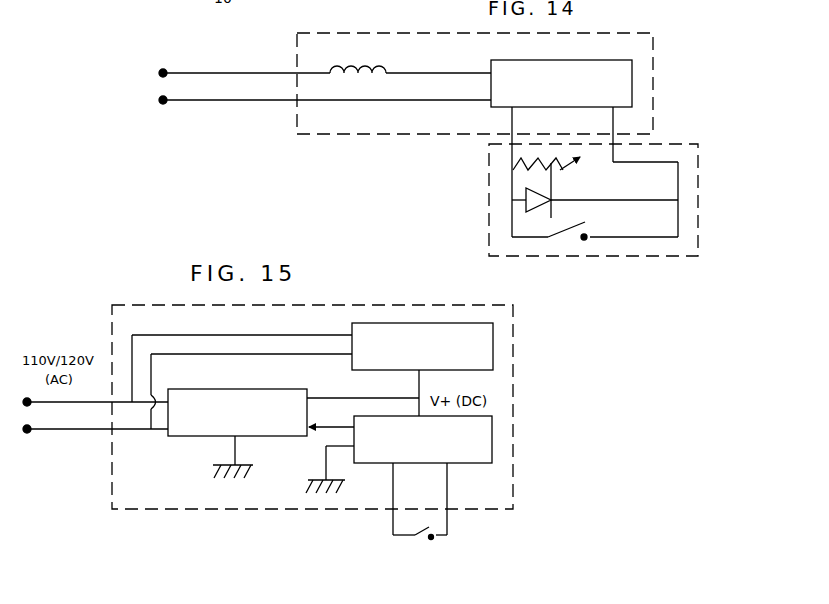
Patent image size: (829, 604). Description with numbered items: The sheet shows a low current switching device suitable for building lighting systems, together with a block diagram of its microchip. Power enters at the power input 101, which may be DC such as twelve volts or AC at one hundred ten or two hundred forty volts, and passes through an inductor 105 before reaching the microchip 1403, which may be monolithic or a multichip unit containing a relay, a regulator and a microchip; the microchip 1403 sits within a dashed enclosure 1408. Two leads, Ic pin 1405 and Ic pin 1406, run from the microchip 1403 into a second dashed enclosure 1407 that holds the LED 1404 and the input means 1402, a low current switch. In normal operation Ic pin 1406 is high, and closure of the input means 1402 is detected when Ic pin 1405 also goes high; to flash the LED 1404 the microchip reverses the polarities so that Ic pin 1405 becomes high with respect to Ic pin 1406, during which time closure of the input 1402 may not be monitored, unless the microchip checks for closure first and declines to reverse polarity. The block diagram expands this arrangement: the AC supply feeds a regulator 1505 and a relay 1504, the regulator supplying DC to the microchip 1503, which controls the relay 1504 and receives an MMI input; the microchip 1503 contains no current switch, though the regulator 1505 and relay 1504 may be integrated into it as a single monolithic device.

In FIG. 14, the power input 101 is at (158, 89).
In FIG. 14, the inductor 105 is at (356, 54).
In FIG. 14, the input means 1402 is at (570, 241).
In FIG. 14, the microchip 1403 is at (633, 77).
In FIG. 14, the LED 1404 is at (567, 172).
In FIG. 14, the Ic pin 1405 is at (508, 118).
In FIG. 14, the Ic pin 1406 is at (617, 118).
In FIG. 14, the switch module 1407 is at (705, 215).
In FIG. 14, the control module 1408 is at (660, 40).
In FIG. 15, the microchip 1503 is at (470, 463).
In FIG. 15, the relay 1504 is at (190, 437).
In FIG. 15, the regulator 1505 is at (493, 348).